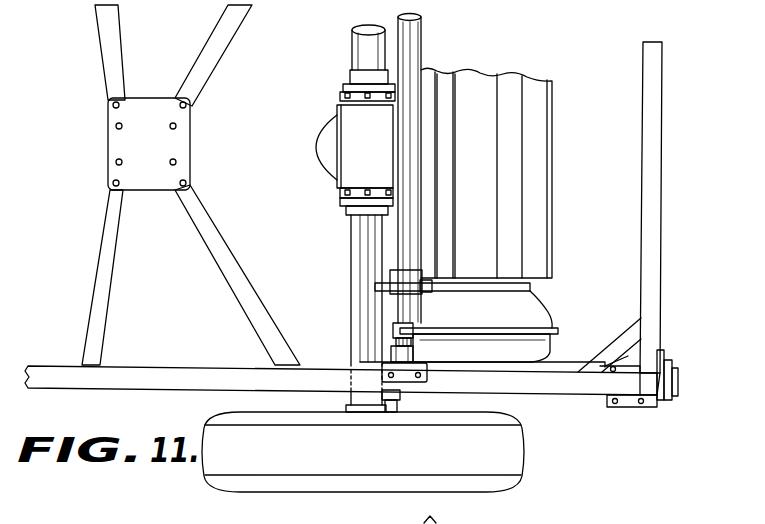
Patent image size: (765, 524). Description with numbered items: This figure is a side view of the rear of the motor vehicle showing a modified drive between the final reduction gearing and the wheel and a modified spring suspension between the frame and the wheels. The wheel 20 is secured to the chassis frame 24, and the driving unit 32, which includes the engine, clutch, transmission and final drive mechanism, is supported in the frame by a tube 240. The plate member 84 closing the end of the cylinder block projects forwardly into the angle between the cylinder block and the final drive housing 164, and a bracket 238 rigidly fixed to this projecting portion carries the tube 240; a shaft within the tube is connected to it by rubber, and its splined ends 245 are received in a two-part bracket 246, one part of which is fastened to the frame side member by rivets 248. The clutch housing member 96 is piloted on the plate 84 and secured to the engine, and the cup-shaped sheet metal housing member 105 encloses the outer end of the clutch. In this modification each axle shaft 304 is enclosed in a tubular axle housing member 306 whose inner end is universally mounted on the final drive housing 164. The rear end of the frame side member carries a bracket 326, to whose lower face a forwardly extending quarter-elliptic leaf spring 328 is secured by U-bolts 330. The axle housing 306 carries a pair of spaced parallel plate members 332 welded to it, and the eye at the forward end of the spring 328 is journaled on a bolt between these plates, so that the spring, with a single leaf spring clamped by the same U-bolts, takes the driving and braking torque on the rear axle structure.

The vehicle chassis frame 24 is at (96, 390).
The wheels 20 is at (527, 466).
The driving unit 32 is at (555, 170).
The tube 240 is at (421, 45).
The axle shaft 304 is at (369, 26).
The final drive housing 164 is at (355, 149).
The tubular axle housing member 306 is at (356, 292).
The bracket 238 is at (394, 273).
The plate member 84 is at (466, 291).
The clutch housing member 96 is at (546, 313).
The sheet metal housing member 105 is at (482, 350).
The two-part bracket 246 is at (396, 350).
The splined ends 245 is at (411, 342).
The plate members 332 is at (390, 362).
The rivets 248 is at (440, 378).
The quarter-elliptic leaf spring 328 is at (541, 396).
The U-bolts 330 is at (668, 366).
The bracket 326 is at (648, 398).